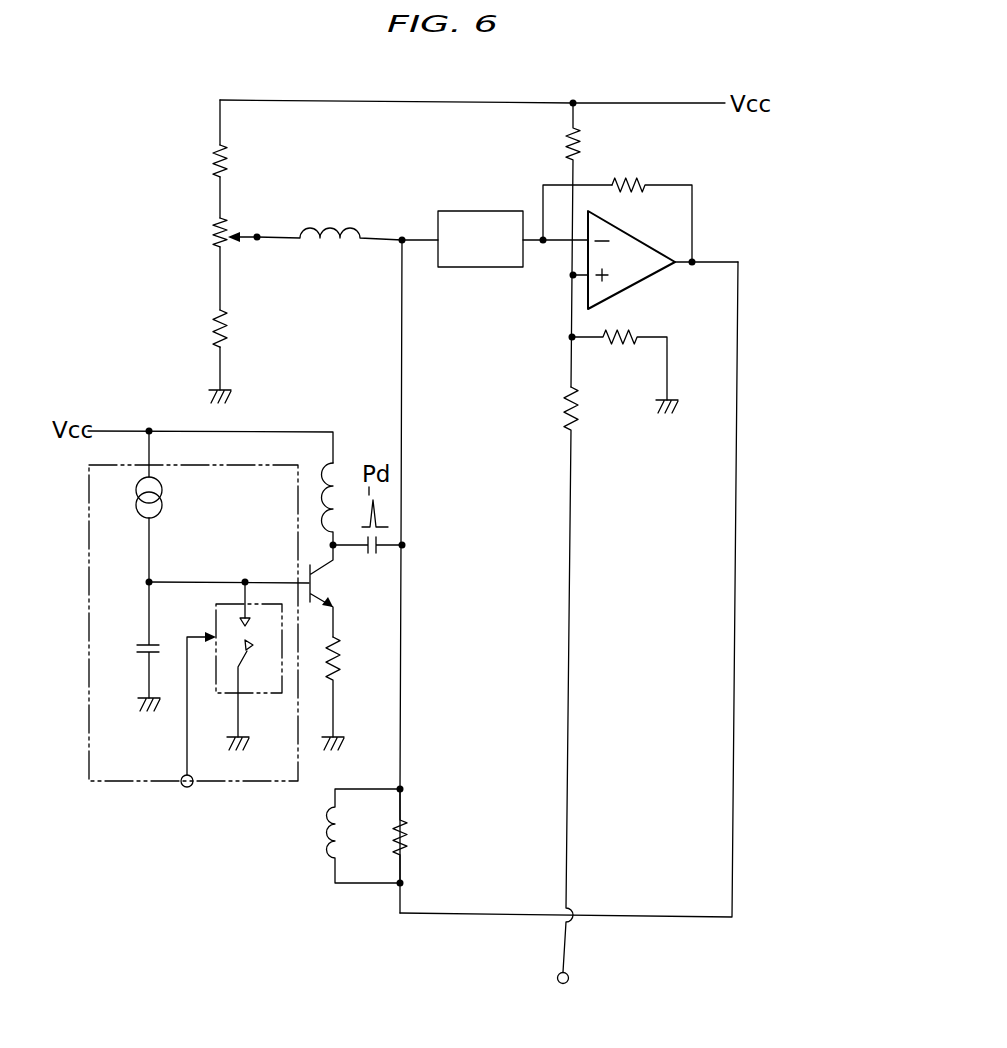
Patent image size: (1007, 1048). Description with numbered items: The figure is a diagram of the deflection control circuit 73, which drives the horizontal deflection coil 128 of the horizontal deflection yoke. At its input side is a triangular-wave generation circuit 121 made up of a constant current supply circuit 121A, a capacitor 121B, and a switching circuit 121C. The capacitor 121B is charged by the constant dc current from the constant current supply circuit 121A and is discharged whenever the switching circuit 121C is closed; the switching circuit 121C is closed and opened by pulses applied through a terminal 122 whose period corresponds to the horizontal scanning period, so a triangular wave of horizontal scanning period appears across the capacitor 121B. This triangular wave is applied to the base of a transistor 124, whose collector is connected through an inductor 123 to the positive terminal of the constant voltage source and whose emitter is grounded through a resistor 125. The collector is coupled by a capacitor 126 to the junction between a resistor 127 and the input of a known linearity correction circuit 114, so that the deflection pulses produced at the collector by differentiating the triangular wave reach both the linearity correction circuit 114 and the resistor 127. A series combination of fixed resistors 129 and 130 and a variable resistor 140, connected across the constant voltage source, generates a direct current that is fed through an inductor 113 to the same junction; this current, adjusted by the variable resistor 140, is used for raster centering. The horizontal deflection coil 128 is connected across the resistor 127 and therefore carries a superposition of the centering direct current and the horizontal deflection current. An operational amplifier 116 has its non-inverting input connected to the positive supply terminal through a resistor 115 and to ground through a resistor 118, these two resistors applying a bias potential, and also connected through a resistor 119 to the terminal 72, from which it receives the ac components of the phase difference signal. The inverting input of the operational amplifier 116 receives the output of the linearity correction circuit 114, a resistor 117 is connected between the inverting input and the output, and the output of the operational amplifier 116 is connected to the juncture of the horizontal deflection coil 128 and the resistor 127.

The deflection control circuit 73 is at (170, 135).
The inductor 113 is at (329, 250).
The linearity correction circuit 114 is at (461, 211).
The resistor 115 is at (578, 136).
The operational amplifier 116 is at (650, 245).
The resistor 117 is at (623, 178).
The resistor 118 is at (625, 330).
The resistor 119 is at (576, 405).
The triangular-wave generation circuit 121 is at (102, 785).
The constant current supply circuit 121A is at (163, 499).
The capacitor 121B is at (137, 645).
The switching circuit 121C is at (266, 693).
The terminal 122 is at (188, 789).
The inductor 123 is at (345, 478).
The transistor 124 is at (316, 583).
The resistor 125 is at (340, 654).
The capacitor 126 is at (372, 556).
The resistor 127 is at (405, 840).
The horizontal deflection coil 128 is at (322, 832).
The fixed resistor 129 is at (228, 163).
The fixed resistor 130 is at (228, 335).
The variable resistor 140 is at (208, 238).
The terminal 72 is at (569, 980).